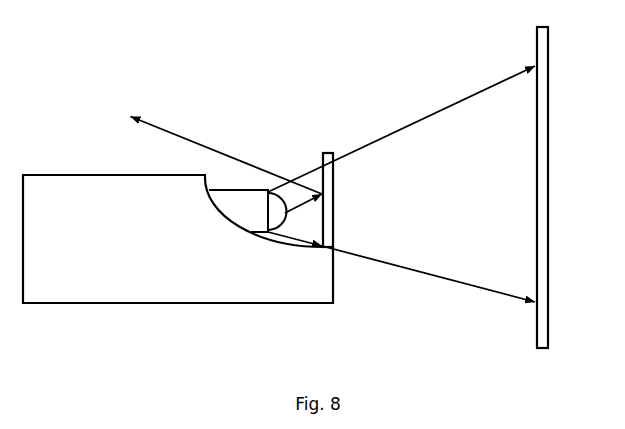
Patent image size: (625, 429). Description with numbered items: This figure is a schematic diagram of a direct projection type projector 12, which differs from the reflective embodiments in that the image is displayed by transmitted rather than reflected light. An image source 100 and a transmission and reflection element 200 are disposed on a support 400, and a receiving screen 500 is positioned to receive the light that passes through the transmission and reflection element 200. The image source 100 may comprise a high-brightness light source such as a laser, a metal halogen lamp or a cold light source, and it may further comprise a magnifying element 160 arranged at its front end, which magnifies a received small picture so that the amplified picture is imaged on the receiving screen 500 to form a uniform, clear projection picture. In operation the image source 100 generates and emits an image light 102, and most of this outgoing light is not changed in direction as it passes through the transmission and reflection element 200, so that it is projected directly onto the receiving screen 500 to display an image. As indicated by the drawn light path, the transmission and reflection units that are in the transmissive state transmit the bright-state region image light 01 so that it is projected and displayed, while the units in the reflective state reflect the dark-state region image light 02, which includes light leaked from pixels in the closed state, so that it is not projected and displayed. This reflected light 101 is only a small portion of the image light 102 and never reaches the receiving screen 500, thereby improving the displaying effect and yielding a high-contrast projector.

The direct projection type projector 12 is at (52, 150).
The image source 100 is at (223, 191).
The reflected light 101 is at (227, 149).
The image light 102 is at (401, 267).
The magnifying element 160 is at (249, 154).
The transmission and reflection element 200 is at (299, 173).
The support 400 is at (208, 246).
The receiving screen 500 is at (570, 187).
The bright-state region image light 01 is at (401, 129).
The dark-state region image light 02 is at (303, 209).